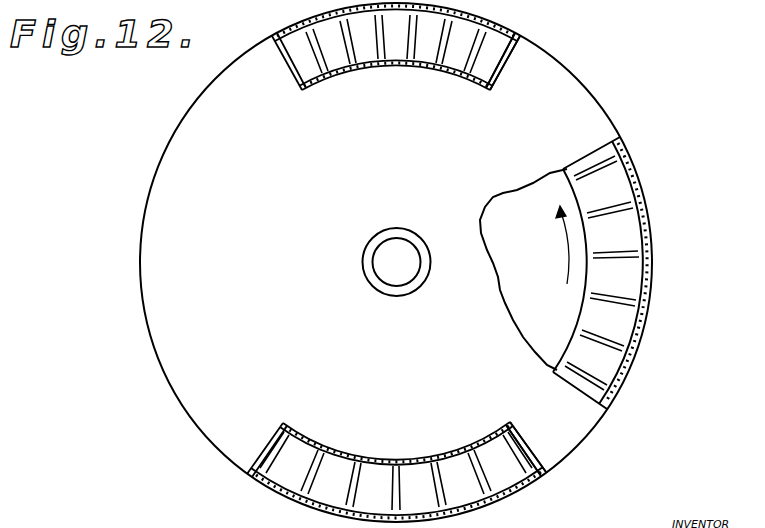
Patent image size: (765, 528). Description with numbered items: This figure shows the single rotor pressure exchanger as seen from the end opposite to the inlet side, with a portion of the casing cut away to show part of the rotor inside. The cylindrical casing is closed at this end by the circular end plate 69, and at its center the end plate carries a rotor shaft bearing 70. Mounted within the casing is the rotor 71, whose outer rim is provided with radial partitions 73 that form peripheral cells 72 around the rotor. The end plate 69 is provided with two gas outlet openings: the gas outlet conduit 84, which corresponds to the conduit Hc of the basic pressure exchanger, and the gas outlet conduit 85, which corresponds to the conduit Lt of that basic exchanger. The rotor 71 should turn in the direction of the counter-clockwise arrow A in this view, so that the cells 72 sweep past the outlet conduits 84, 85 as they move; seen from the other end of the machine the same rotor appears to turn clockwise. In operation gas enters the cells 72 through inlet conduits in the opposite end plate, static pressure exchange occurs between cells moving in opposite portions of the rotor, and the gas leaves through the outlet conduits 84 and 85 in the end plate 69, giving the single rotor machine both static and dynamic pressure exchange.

The end plate 69 is at (573, 102).
The rotor shaft bearing 70 is at (363, 270).
The rotor 71 is at (548, 264).
The peripheral cells 72 is at (610, 233).
The radial partitions 73 is at (622, 181).
The gas outlet conduit 84 is at (377, 68).
The gas outlet conduit 85 is at (332, 448).
The conduit Hc is at (518, 60).
The conduit Lt is at (545, 468).
The counter-clockwise arrow A is at (572, 273).